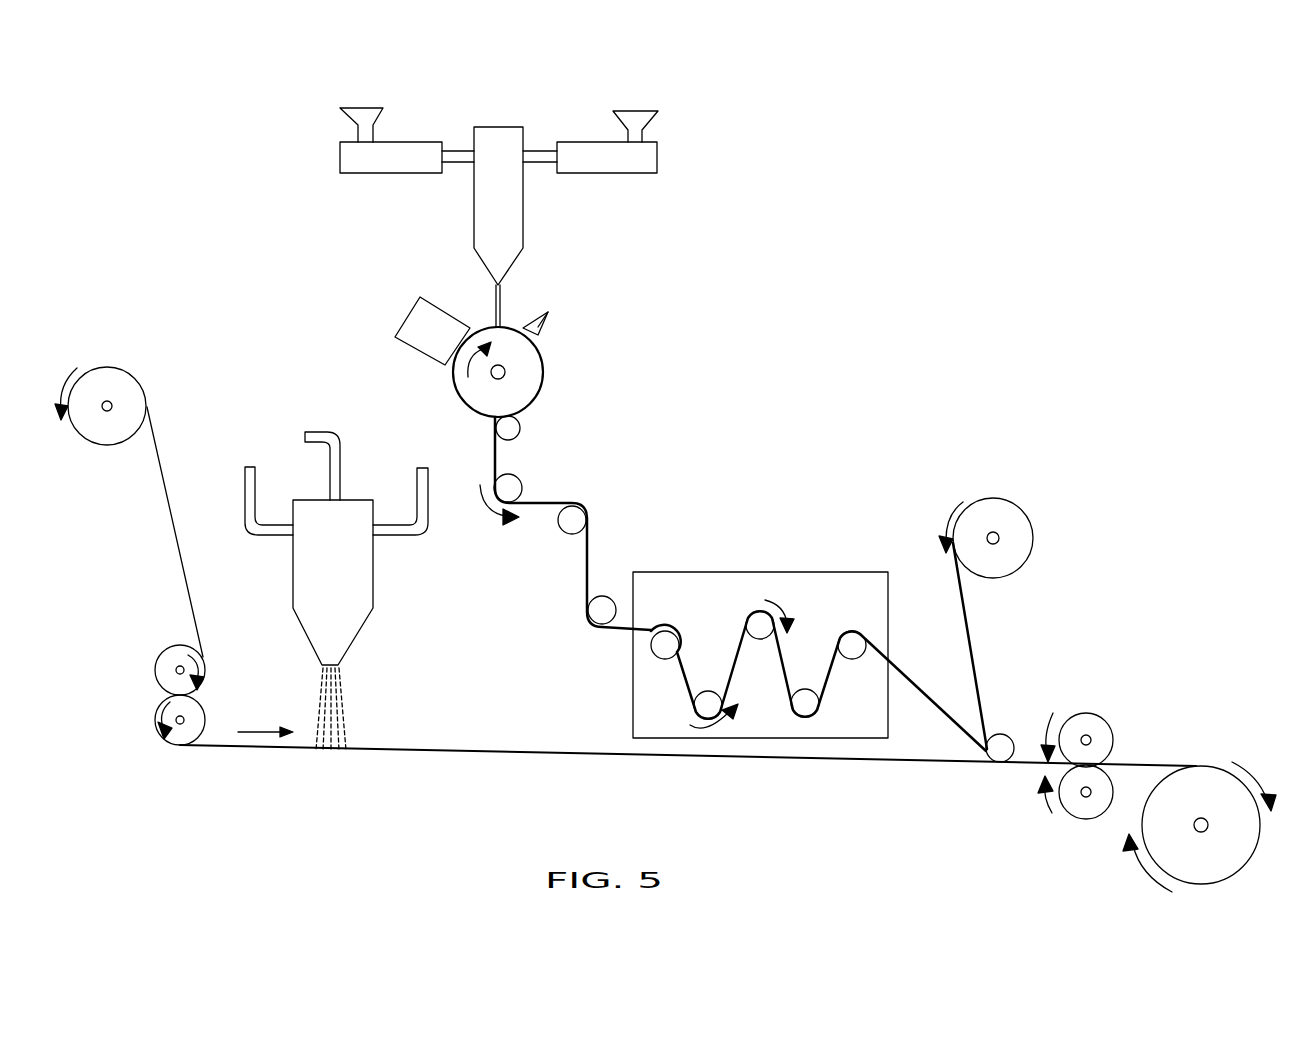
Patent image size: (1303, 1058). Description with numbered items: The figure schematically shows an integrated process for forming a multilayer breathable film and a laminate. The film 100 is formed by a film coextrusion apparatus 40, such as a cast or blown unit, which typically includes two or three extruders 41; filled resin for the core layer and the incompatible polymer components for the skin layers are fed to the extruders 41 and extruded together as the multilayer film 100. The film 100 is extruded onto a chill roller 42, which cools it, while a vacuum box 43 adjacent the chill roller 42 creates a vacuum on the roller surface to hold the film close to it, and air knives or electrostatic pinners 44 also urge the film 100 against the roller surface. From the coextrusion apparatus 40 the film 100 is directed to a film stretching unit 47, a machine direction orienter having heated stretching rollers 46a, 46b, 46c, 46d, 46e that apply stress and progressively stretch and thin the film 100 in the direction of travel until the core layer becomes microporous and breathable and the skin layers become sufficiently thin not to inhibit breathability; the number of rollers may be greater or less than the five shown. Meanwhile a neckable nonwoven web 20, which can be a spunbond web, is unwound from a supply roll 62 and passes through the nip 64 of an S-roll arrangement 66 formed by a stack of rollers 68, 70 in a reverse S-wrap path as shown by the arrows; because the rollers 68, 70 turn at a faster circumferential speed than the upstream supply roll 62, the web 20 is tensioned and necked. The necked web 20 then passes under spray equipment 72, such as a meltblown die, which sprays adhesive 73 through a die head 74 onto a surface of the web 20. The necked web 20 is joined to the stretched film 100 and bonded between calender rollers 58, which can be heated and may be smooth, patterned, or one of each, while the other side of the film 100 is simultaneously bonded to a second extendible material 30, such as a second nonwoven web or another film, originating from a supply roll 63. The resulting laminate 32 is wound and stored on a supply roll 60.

The nonwoven web 20 is at (192, 538).
The second material 30 is at (972, 643).
The laminate 32 is at (1135, 763).
The film coextrusion apparatus 40 is at (510, 215).
The extruders 41 is at (357, 162).
The chill roller 42 is at (530, 383).
The vacuum box 43 is at (412, 330).
The air knives or electrostatic pinners 44 is at (547, 327).
The stretching roller 46a is at (668, 643).
The stretching roller 46b is at (715, 703).
The stretching roller 46c is at (763, 628).
The stretching roller 46d is at (808, 703).
The stretching roller 46e is at (855, 645).
The film stretching unit 47 is at (742, 572).
The calender rollers 58 is at (1080, 720).
The supply roll 60 is at (1242, 820).
The supply roll 62 is at (103, 378).
The supply roll 63 is at (1015, 530).
The nip 64 is at (214, 691).
The S-roll arrangement 66 is at (204, 632).
The roller 68 is at (160, 670).
The roller 70 is at (157, 717).
The spray equipment 72 is at (357, 565).
The adhesive 73 is at (343, 722).
The die head 74 is at (340, 672).
The multilayer film 100 is at (545, 500).